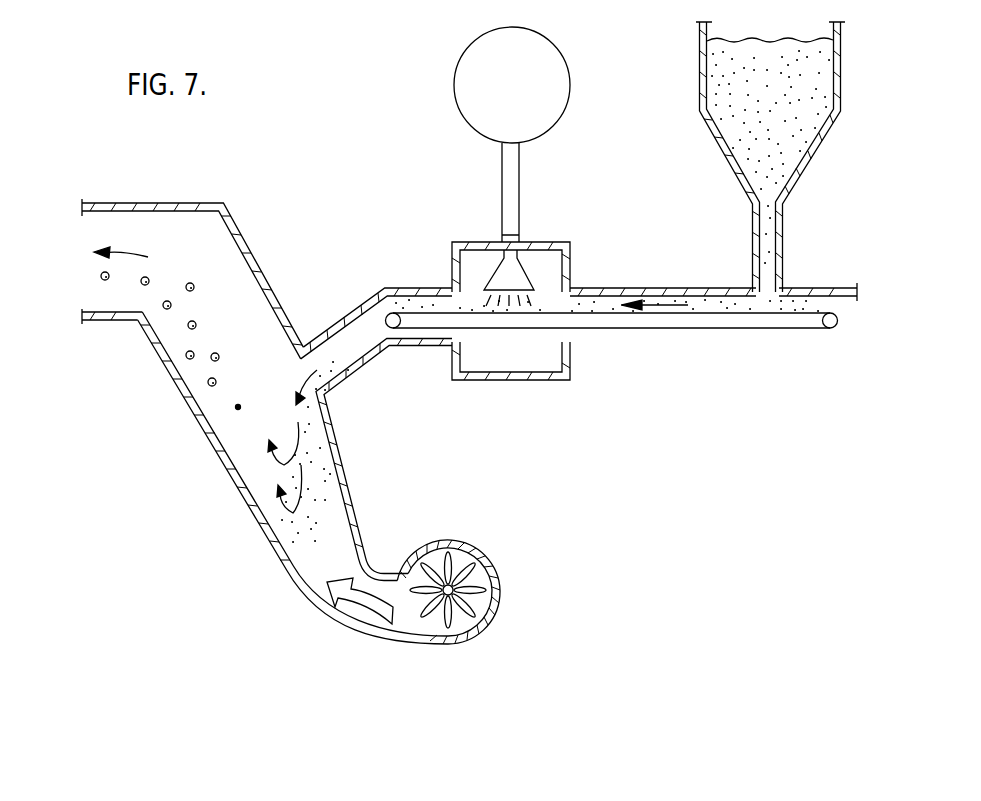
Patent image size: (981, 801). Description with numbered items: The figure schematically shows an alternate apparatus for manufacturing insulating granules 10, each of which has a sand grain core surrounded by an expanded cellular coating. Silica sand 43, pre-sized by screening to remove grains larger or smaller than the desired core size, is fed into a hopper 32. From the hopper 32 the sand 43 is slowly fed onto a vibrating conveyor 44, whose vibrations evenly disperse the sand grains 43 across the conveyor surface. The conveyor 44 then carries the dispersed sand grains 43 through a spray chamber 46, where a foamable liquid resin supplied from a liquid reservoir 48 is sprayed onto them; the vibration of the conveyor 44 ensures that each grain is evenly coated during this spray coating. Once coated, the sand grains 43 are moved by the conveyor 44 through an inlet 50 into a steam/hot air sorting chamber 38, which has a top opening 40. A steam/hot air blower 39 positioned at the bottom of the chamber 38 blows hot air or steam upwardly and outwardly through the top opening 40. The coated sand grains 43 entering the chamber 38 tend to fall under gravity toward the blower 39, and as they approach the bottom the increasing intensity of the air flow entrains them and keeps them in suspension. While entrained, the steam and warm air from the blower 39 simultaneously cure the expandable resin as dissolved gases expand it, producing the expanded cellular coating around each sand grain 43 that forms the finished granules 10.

The insulating granules 10 is at (101, 280).
The hopper 32 is at (798, 135).
The steam/hot air sorting chamber 38 is at (220, 423).
The steam/hot air blower 39 is at (475, 563).
The top opening 40 is at (116, 238).
The silica sand 43 is at (787, 88).
The vibrating conveyor 44 is at (803, 312).
The spray chamber 46 is at (535, 352).
The liquid reservoir 48 is at (528, 98).
The inlet 50 is at (300, 363).